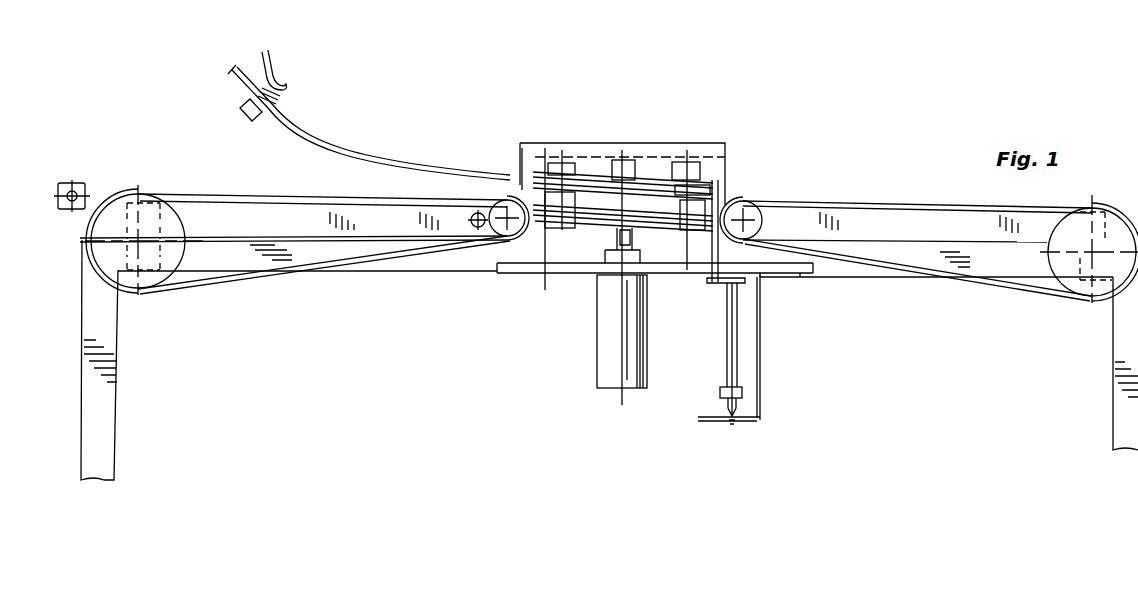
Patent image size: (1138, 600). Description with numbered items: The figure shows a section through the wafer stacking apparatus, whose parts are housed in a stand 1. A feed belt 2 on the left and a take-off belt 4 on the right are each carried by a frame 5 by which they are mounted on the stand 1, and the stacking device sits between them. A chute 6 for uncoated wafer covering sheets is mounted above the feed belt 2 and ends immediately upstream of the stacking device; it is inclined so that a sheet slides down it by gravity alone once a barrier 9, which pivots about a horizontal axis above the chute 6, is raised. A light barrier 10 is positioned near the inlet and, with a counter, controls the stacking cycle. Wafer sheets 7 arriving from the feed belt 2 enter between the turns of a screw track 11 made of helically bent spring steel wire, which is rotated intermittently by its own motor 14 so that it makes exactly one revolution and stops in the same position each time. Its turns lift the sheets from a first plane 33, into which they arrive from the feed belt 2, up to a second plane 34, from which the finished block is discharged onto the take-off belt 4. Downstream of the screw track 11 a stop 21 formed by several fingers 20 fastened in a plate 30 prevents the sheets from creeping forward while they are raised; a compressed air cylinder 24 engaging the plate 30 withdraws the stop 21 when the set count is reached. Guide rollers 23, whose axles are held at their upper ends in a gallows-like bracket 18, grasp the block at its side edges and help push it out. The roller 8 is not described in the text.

The stand 1 is at (1125, 348).
The feed belt 2 is at (410, 192).
The take-off belt 4 is at (800, 201).
The frame 5 is at (456, 216).
The chute 6 is at (372, 167).
The wafer sheet 7 is at (585, 190).
The guide roller 8 is at (475, 228).
The barrier 9 is at (246, 114).
The light barrier 10 is at (70, 182).
The screw track 11 is at (643, 190).
The motor 14 is at (608, 343).
The gallows-like bracket 18 is at (532, 147).
The fingers 20 is at (735, 190).
The stop 21 is at (706, 303).
The guide rollers 23 is at (707, 187).
The compressed air cylinder 24 is at (737, 344).
The plate 30 is at (280, 84).
The first plane 33 is at (544, 262).
The second plane 34 is at (517, 182).